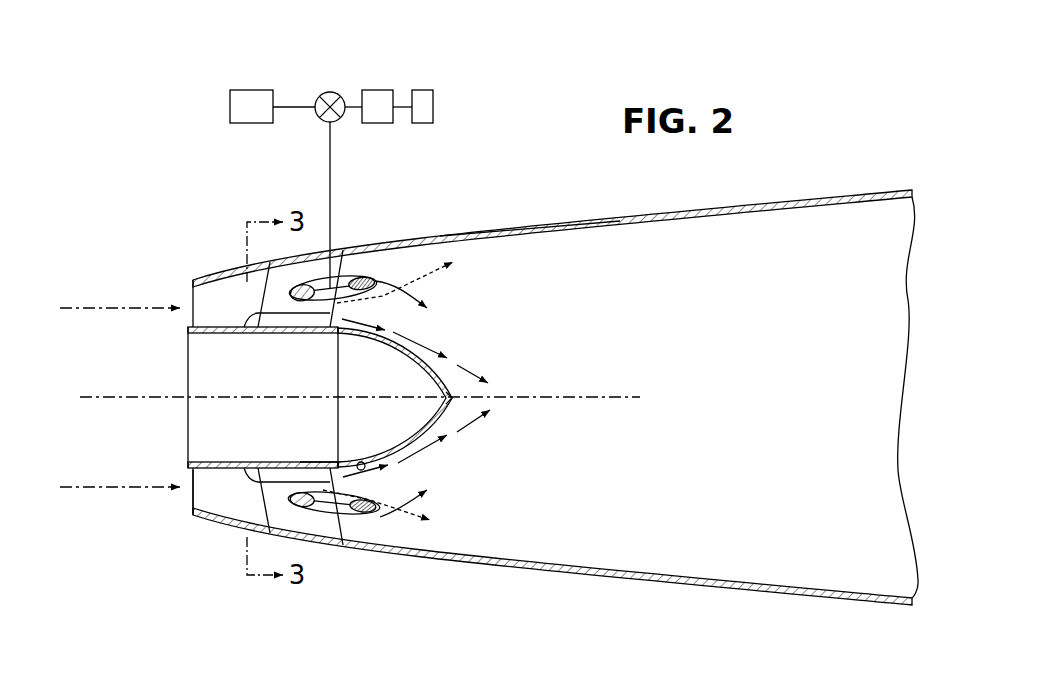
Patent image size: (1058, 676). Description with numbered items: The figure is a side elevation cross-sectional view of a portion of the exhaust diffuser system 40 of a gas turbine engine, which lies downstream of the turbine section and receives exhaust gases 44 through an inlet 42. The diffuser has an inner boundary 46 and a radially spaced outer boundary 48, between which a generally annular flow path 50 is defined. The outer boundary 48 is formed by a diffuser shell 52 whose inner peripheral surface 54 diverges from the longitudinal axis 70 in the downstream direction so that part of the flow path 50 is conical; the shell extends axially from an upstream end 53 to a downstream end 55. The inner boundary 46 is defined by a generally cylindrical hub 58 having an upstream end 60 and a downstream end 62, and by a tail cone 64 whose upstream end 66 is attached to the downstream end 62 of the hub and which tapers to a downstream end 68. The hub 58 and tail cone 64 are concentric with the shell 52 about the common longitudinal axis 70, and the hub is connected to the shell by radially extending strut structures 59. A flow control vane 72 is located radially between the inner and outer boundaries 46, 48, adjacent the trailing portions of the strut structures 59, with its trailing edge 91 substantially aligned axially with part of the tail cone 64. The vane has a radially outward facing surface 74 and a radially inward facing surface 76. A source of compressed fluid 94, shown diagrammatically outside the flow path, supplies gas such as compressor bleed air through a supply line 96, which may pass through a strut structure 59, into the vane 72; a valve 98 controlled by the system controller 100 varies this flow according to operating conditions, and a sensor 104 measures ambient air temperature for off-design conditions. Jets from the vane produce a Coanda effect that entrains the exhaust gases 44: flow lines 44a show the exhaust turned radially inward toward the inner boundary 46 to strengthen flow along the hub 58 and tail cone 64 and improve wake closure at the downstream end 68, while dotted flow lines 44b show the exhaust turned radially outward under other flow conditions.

The exhaust diffuser system 40 is at (481, 176).
The inlet 42 is at (210, 490).
The exhaust gases 44 is at (128, 307).
The flow lines 44a is at (385, 272).
The dotted flow lines 44b is at (427, 277).
The inner boundary 46 is at (214, 322).
The outer boundary 48 is at (482, 242).
The flow path 50 is at (220, 498).
The diffuser shell 52 is at (523, 230).
The upstream end 53 is at (228, 272).
The inner peripheral surface 54 is at (547, 558).
The downstream end 55 is at (860, 190).
The hub 58 is at (246, 470).
The strut structures 59 is at (248, 335).
The upstream end 60 is at (192, 316).
The downstream end 62 is at (262, 314).
The tail cone 64 is at (443, 424).
The upstream end 66 is at (359, 463).
The downstream end 68 is at (453, 404).
The longitudinal axis 70 is at (613, 397).
The flow control vane 72 is at (360, 270).
The radially outward facing surface 74 is at (358, 515).
The radially inward facing surface 76 is at (333, 493).
The trailing edge 91 is at (380, 285).
The source of compressed fluid 94 is at (250, 90).
The supply line 96 is at (331, 182).
The valve 98 is at (327, 92).
The system controller 100 is at (378, 90).
The sensor 104 is at (420, 90).